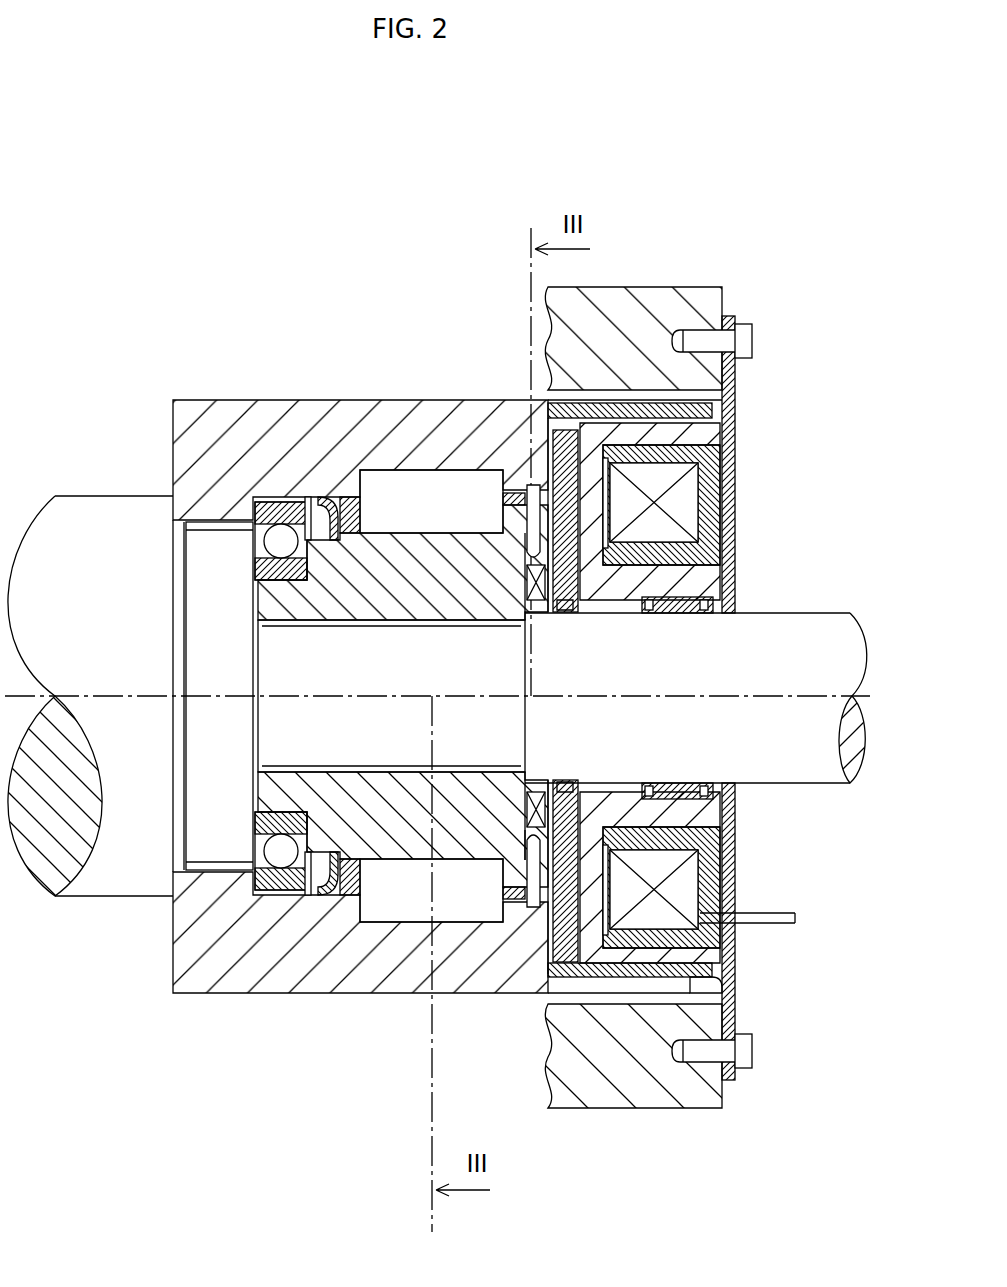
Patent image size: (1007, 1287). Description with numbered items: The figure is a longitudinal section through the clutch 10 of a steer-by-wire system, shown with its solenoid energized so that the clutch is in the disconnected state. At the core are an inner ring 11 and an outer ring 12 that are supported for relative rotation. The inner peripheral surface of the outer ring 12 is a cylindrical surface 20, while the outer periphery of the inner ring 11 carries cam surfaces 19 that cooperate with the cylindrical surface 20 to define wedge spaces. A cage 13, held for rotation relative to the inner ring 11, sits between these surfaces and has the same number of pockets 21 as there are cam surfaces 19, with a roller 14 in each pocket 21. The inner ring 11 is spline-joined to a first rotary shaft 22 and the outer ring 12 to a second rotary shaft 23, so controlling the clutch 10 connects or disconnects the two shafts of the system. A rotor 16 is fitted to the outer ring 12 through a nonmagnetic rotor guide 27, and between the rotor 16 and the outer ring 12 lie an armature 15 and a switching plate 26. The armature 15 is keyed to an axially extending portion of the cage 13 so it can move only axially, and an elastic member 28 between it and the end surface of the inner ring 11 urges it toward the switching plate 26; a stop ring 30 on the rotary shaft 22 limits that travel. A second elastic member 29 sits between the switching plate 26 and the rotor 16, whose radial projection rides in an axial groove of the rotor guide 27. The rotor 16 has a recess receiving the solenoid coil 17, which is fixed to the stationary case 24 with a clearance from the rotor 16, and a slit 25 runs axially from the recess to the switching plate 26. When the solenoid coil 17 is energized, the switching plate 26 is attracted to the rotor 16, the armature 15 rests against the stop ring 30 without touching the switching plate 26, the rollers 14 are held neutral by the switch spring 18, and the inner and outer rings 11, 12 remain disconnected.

The clutch 10 is at (355, 273).
The inner ring 11 is at (318, 893).
The outer ring 12 is at (201, 440).
The cage 13 is at (325, 505).
The roller 14 is at (428, 482).
The armature 15 is at (532, 490).
The rotor 16 is at (632, 585).
The solenoid coil 17 is at (690, 887).
The switch spring 18 is at (515, 497).
The cam surfaces 19 is at (345, 495).
The cylindrical surface 20 is at (383, 480).
The pockets 21 is at (346, 897).
The first rotary shaft 22 is at (757, 650).
The second rotary shaft 23 is at (125, 560).
The case 24 is at (605, 1095).
The slit 25 is at (645, 400).
The switching plate 26 is at (556, 965).
The rotor guide 27 is at (586, 478).
The elastic member 28 is at (495, 838).
The elastic member 29 is at (605, 835).
The stop ring 30 is at (600, 797).